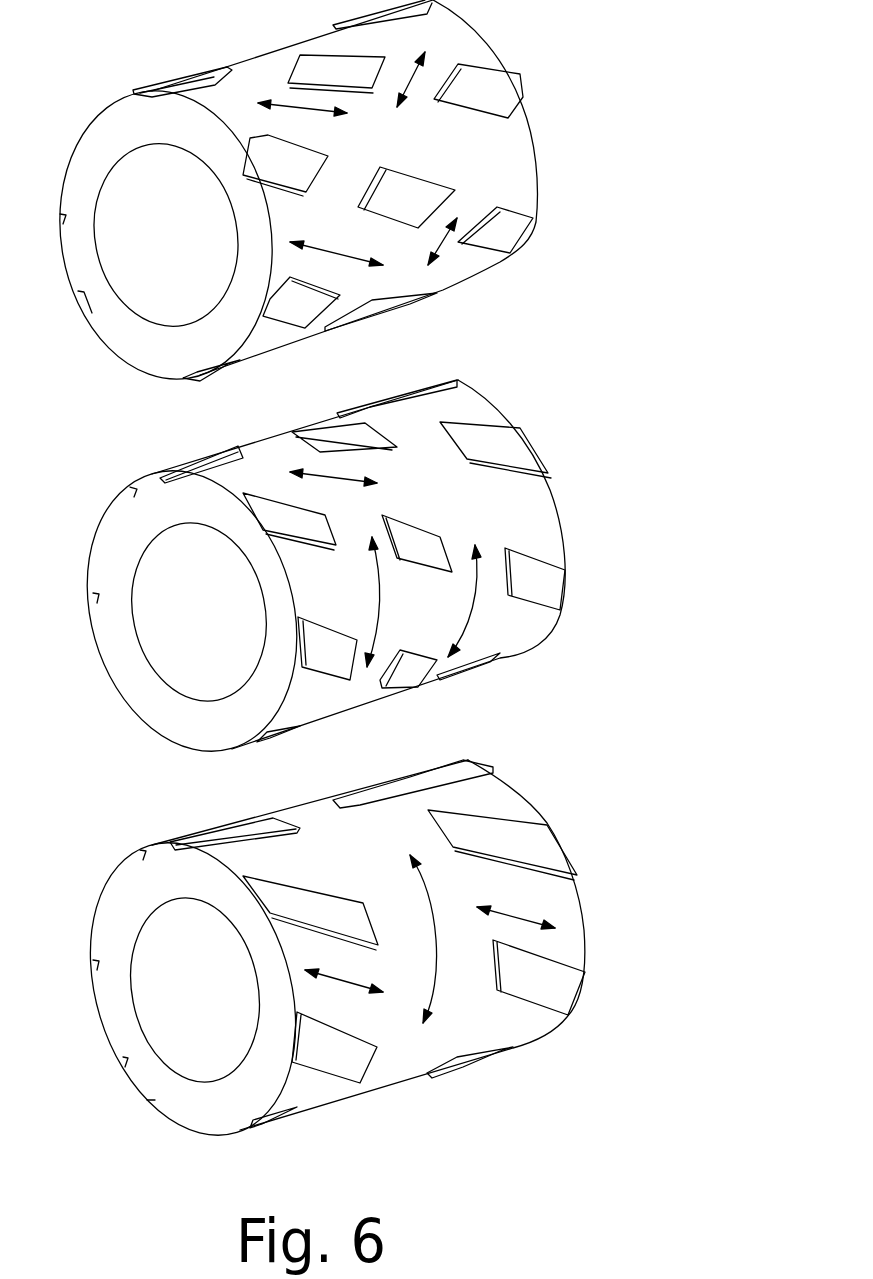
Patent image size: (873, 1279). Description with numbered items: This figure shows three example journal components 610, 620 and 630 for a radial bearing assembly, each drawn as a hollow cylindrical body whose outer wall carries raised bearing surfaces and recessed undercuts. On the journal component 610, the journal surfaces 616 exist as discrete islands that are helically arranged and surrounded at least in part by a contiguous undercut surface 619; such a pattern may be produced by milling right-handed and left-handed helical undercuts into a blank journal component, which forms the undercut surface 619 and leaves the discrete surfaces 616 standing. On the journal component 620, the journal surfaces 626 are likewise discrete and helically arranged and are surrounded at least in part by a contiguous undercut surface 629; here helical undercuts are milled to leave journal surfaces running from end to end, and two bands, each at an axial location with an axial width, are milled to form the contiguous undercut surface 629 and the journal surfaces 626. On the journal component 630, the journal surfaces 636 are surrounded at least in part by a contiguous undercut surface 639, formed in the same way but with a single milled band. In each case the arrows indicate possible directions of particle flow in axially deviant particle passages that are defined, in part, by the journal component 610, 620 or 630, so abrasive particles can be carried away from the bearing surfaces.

The journal component 610 is at (133, 36).
The journal surfaces 616 is at (433, 209).
The undercut surface 619 is at (476, 156).
The journal component 620 is at (133, 424).
The journal surfaces 626 is at (531, 459).
The undercut surface 629 is at (510, 527).
The journal component 630 is at (148, 806).
The journal surfaces 636 is at (545, 852).
The undercut surface 639 is at (383, 879).